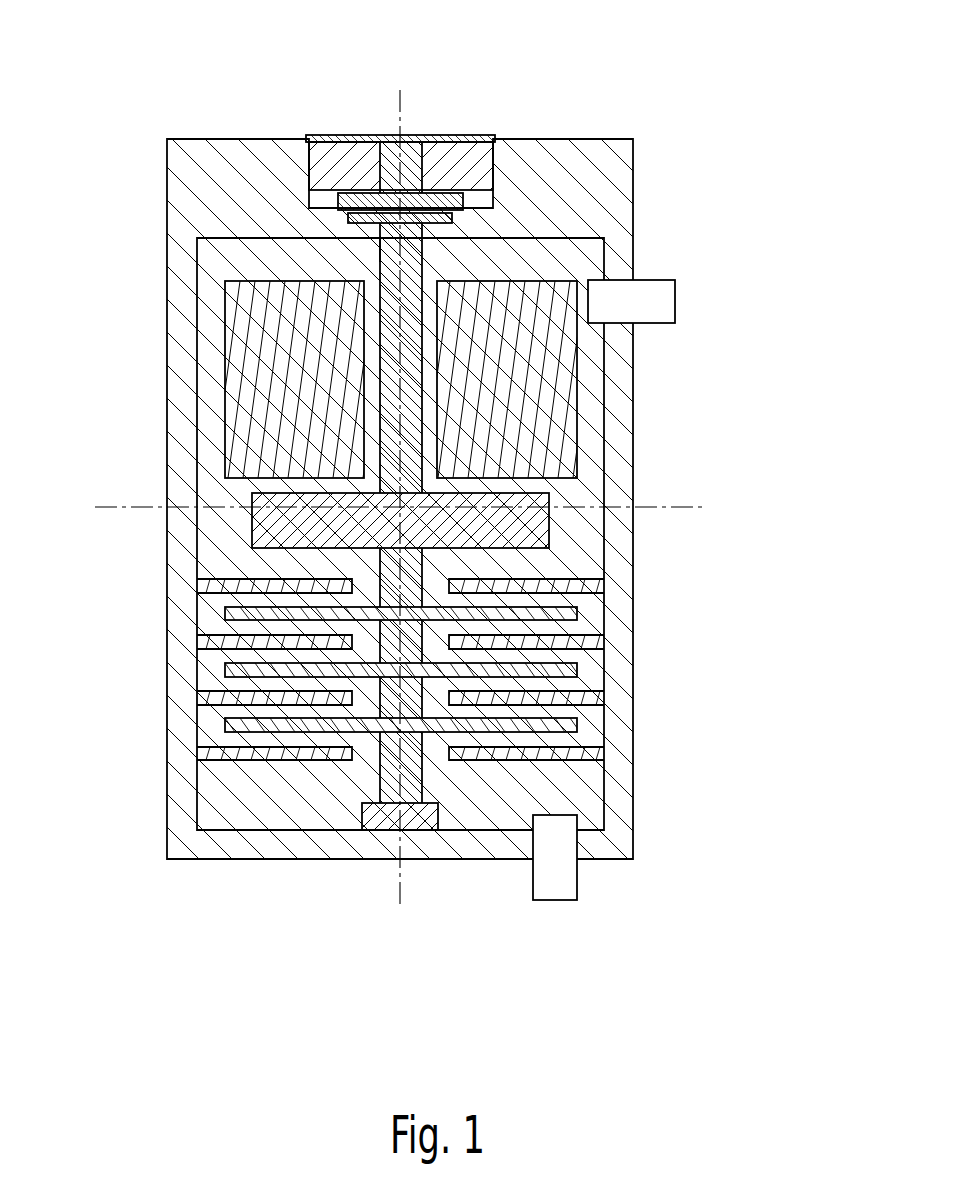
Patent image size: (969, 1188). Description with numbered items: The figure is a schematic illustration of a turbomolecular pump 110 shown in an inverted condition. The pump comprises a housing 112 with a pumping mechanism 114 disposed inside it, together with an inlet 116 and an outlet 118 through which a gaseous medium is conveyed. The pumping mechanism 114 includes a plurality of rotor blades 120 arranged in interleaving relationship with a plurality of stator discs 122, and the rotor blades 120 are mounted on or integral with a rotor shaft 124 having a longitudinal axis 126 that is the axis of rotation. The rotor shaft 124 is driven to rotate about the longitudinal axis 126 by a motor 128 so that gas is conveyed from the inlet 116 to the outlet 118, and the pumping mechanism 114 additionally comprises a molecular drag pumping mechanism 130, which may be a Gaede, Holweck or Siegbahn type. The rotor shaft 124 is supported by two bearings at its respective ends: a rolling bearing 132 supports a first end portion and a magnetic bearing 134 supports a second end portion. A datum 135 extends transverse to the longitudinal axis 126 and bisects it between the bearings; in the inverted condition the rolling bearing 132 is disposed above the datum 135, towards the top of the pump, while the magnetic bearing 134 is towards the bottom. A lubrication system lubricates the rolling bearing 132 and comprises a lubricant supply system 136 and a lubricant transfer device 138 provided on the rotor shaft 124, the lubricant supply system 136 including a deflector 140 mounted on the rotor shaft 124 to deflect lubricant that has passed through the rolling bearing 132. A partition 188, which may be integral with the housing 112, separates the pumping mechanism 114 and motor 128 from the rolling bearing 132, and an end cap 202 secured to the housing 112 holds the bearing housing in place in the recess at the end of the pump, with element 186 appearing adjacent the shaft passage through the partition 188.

The turbomolecular pump 110 is at (664, 74).
The housing 112 is at (167, 568).
The pumping mechanism 114 is at (218, 775).
The inlet 116 is at (577, 888).
The outlet 118 is at (666, 324).
The rotor blades 120 is at (225, 668).
The stator discs 122 is at (205, 584).
The rotor shaft 124 is at (382, 797).
The longitudinal axis 126 is at (399, 101).
The motor 128 is at (225, 388).
The molecular drag pumping mechanism 130 is at (549, 527).
The rolling bearing 132 is at (337, 188).
The magnetic bearing 134 is at (425, 822).
The datum 135 is at (110, 506).
The lubricant supply system 136 is at (337, 153).
The lubricant transfer device 138 is at (430, 143).
The deflector 140 is at (452, 224).
The shaft passage 186 is at (380, 242).
The partition 188 is at (217, 243).
The end cap 202 is at (493, 135).